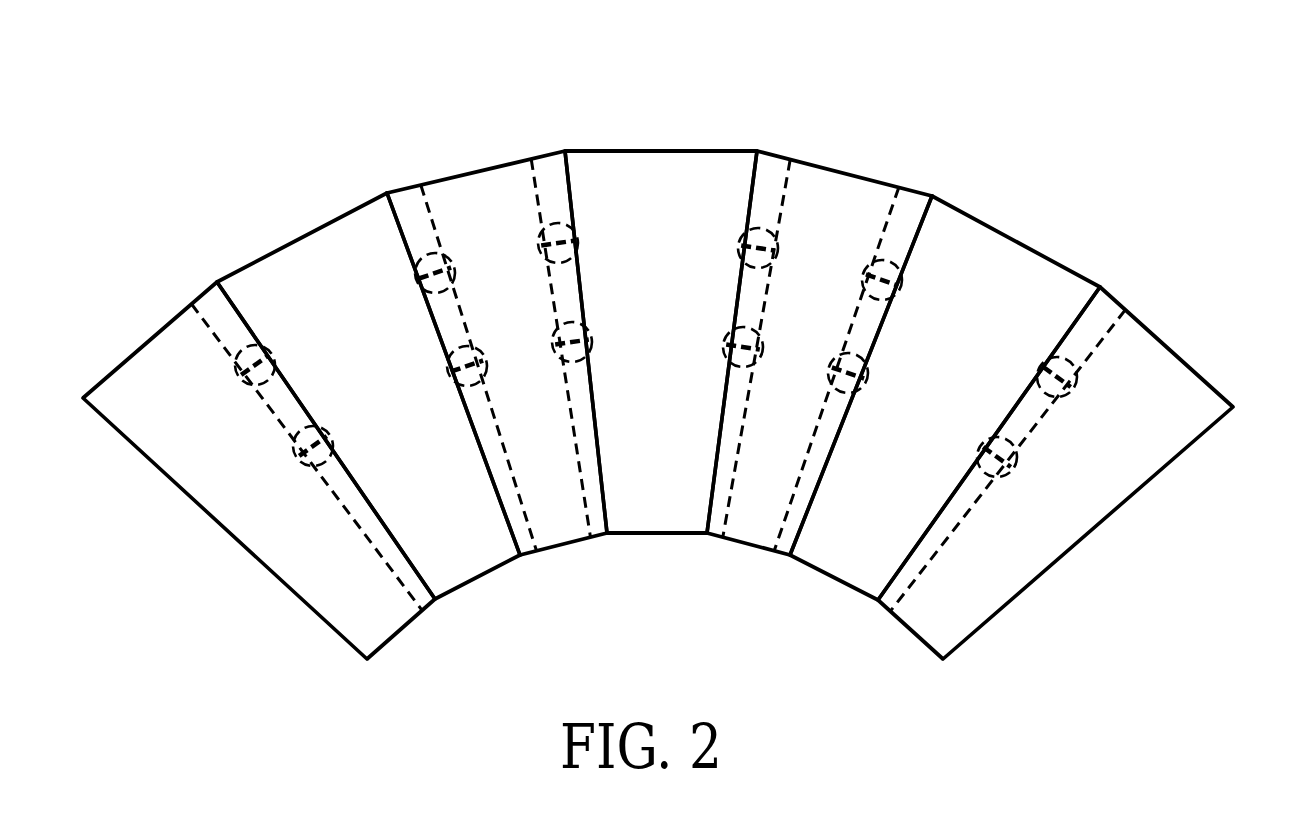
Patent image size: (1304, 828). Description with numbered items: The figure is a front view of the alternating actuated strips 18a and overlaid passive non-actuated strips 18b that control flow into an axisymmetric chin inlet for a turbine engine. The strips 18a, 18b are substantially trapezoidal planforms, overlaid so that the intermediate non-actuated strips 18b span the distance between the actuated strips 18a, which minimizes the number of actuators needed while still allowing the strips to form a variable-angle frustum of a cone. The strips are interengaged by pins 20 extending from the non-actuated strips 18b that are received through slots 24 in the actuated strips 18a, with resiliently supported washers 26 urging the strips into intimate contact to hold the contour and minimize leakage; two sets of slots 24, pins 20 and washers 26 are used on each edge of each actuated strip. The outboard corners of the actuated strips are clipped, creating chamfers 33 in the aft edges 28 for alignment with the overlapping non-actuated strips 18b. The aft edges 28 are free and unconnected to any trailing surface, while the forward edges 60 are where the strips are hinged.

The actuated strips 18a is at (327, 258).
The non-actuated strips 18b is at (162, 357).
The pins 20 is at (656, 347).
The slots 24 is at (442, 250).
The washers 26 is at (423, 288).
The aft edges 28 is at (968, 212).
The chamfers 33 is at (551, 160).
The forward edges 60 is at (652, 537).